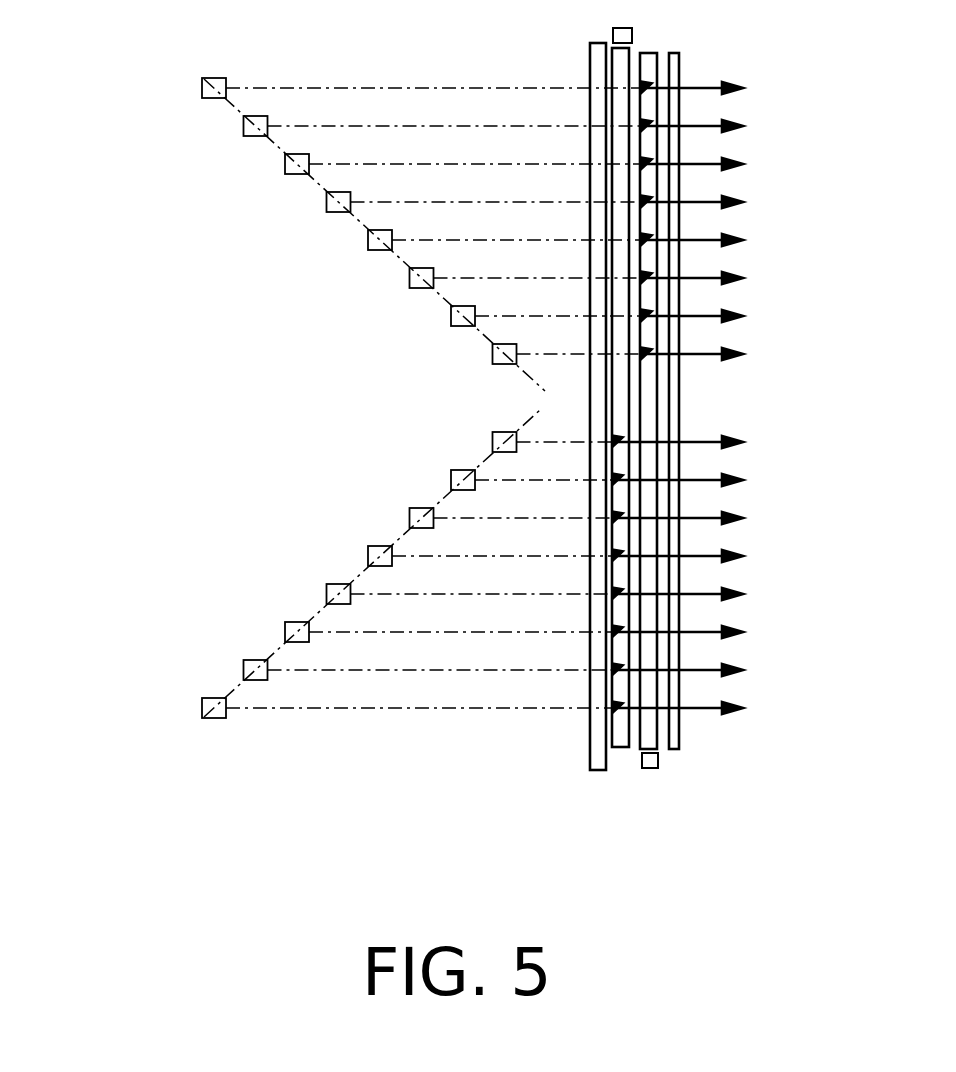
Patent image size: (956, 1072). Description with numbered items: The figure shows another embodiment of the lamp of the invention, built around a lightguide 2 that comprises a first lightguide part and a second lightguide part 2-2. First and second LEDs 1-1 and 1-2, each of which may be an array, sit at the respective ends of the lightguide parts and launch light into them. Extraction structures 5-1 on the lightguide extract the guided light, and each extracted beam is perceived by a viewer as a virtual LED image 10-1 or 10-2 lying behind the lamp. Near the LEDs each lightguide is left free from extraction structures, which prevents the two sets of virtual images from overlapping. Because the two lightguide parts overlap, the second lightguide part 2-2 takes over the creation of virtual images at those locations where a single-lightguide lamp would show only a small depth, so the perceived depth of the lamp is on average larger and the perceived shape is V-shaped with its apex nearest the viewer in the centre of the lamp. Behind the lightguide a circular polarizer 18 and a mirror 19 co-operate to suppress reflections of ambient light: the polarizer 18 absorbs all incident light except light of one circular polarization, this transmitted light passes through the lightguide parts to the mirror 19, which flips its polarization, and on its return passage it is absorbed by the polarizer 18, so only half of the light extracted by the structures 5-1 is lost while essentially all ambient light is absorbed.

The first LED 1-1 is at (632, 36).
The second LED 1-2 is at (650, 769).
The lightguide 2 is at (614, 57).
The second lightguide part 2-2 is at (648, 740).
The extraction structures 5-1 is at (618, 478).
The virtual LED image 10-1 is at (202, 708).
The virtual LED image 10-2 is at (202, 88).
The circular polarizer 18 is at (678, 742).
The mirror 19 is at (596, 742).